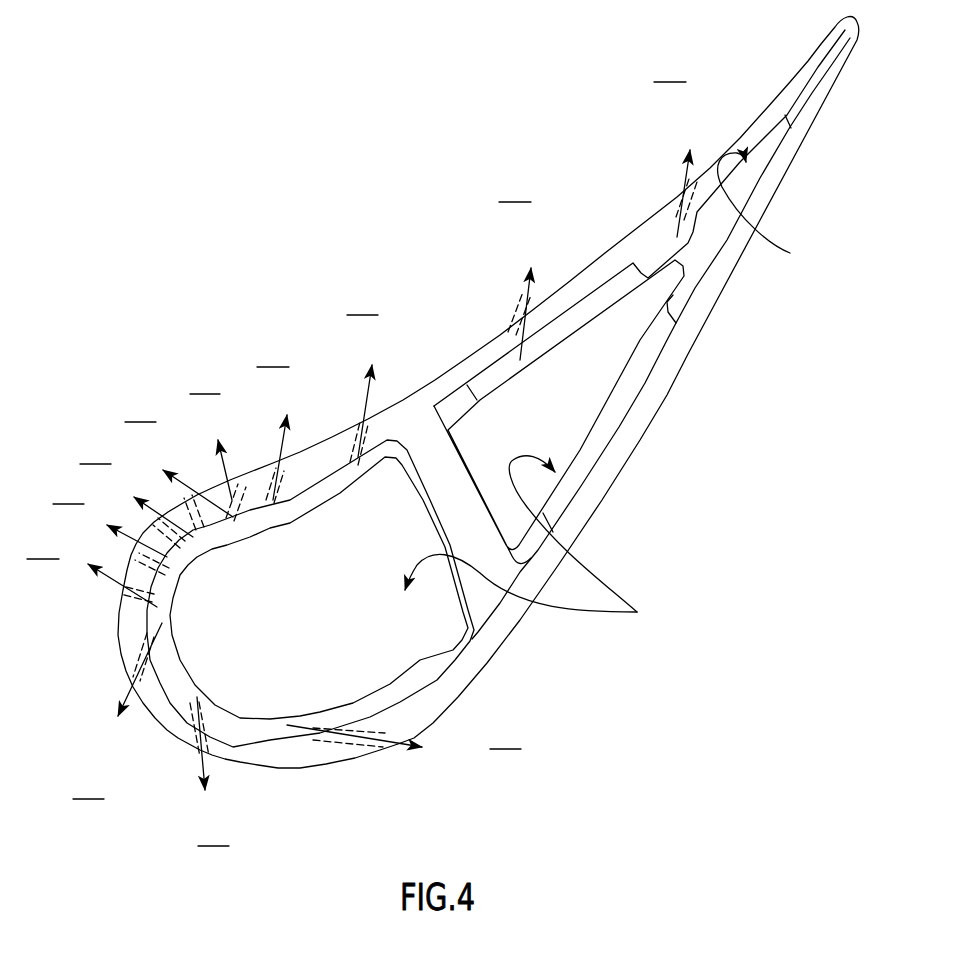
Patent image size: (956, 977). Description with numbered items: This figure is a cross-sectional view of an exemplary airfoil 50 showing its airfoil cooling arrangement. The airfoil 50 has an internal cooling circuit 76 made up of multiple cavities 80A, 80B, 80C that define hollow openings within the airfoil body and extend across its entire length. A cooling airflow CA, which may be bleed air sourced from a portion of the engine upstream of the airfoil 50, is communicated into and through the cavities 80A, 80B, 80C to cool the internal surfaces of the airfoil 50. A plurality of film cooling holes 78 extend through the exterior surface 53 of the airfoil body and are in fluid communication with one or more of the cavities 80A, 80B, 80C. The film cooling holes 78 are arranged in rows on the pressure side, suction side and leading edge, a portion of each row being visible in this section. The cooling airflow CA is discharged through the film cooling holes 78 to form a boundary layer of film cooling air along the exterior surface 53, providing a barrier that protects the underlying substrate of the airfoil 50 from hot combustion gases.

The airfoil 50 is at (378, 116).
The exterior surface 53 is at (605, 251).
The internal cooling circuit 76 is at (416, 495).
The film cooling holes 78 is at (697, 185).
The cavity 80A is at (384, 596).
The cavity 80B is at (587, 418).
The cavity 80C is at (760, 155).
The cooling airflow CA is at (616, 390).